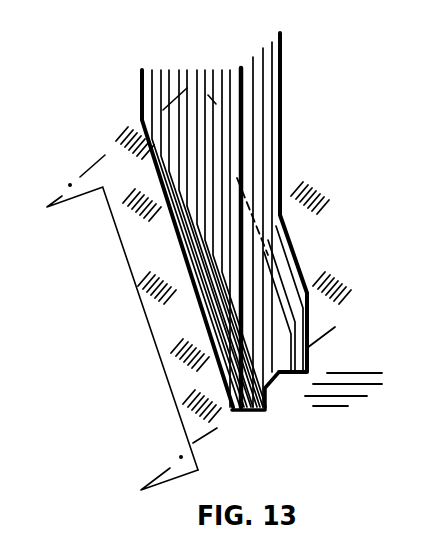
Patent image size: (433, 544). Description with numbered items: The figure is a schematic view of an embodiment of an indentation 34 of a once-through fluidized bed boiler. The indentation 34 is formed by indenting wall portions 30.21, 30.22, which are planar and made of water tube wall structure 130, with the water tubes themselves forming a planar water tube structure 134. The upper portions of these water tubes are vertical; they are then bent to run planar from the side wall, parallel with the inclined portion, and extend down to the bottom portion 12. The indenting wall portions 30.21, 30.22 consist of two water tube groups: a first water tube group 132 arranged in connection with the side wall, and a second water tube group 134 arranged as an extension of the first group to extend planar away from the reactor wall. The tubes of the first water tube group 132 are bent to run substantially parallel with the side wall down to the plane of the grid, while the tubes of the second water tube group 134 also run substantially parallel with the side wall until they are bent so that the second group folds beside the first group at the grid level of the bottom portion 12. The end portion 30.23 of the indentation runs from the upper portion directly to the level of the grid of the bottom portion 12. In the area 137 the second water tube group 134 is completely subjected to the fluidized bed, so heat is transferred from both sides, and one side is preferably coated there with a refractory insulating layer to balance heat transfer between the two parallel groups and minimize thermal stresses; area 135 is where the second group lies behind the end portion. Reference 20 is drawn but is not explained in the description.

The bottom portion 12 is at (385, 412).
The component 20 is at (402, 296).
The indentation 34 is at (218, 62).
The water tube wall structure 130 is at (237, 178).
The first water tube group 132 is at (177, 120).
The second water tube group 134 is at (215, 100).
The area 135 is at (230, 402).
The area 137 is at (213, 345).
The indenting wall portion 30.21 is at (285, 127).
The indenting wall portion 30.22 is at (207, 117).
The end portion 30.23 is at (257, 262).